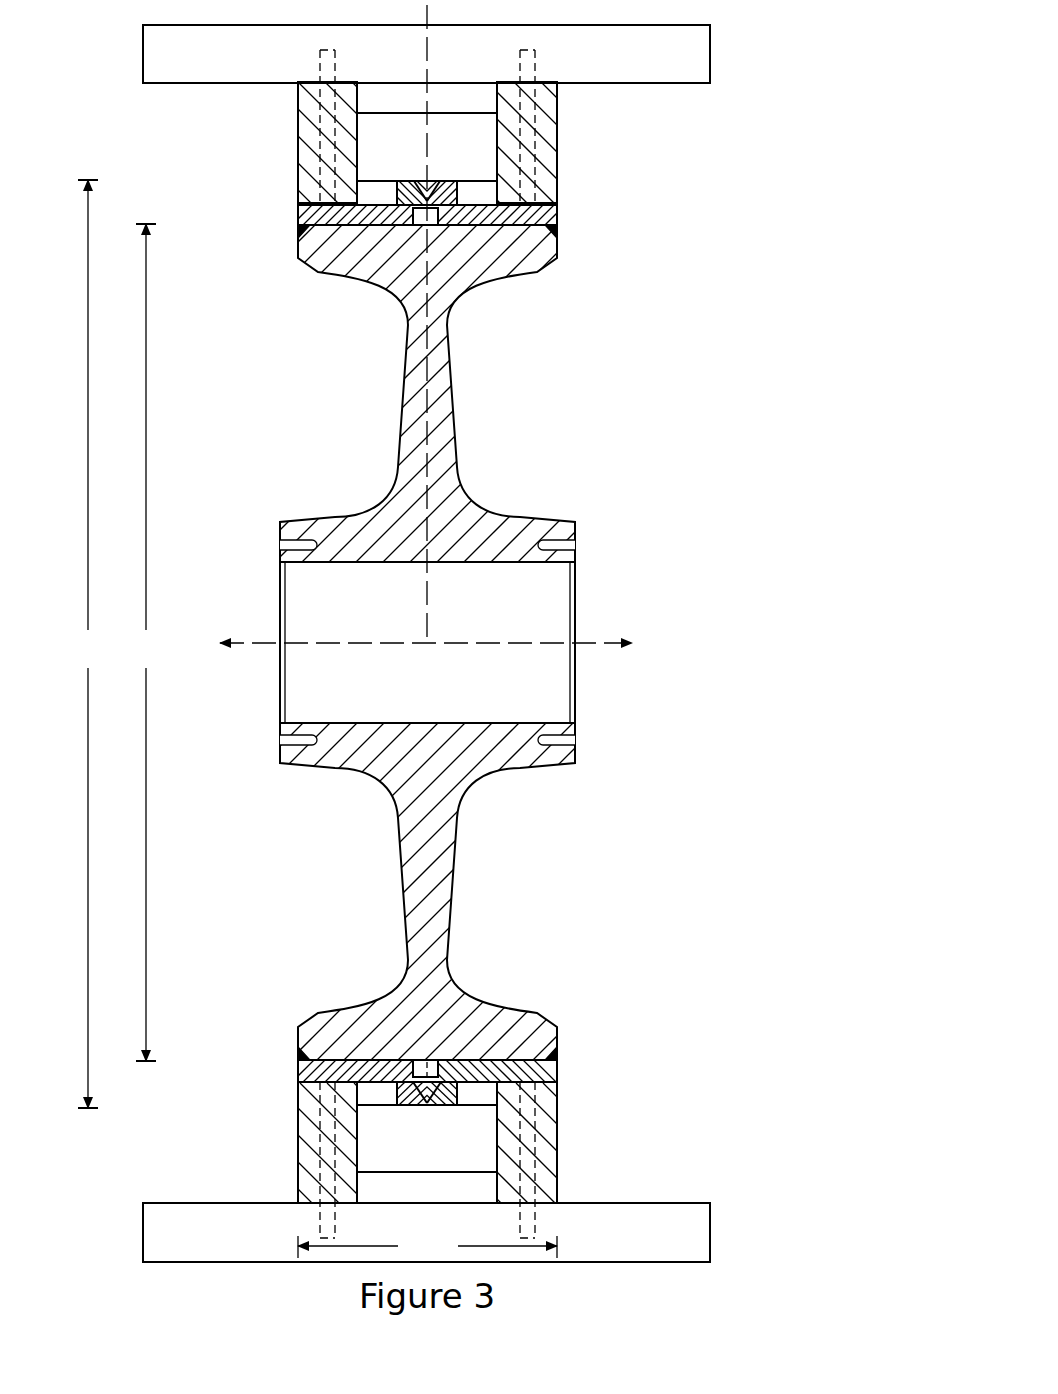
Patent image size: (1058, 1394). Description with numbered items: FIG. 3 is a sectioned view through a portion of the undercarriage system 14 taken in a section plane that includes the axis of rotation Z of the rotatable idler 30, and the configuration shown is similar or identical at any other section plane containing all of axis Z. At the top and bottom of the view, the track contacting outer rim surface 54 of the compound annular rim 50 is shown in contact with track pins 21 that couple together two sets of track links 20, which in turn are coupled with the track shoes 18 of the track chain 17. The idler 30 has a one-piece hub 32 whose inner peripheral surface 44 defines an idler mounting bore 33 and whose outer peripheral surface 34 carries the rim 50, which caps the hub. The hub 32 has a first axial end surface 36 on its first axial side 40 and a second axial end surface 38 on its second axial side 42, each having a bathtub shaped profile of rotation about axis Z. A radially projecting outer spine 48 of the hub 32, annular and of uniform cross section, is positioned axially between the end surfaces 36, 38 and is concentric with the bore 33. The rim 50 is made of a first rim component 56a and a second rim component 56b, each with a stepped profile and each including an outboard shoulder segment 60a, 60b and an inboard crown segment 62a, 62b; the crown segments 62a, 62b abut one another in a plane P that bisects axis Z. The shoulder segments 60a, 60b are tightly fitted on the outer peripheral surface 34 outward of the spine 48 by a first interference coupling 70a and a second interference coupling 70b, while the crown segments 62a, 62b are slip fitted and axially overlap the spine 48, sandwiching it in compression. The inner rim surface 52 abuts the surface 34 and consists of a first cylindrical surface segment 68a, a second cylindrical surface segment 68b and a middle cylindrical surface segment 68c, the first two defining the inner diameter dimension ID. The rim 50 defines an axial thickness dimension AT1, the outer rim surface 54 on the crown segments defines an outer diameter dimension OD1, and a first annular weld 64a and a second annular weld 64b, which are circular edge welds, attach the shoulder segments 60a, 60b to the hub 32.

The undercarriage system 14 is at (797, 66).
The track chain 17 is at (727, 143).
The track shoes 18 is at (695, 60).
The track links 20 is at (557, 118).
The track pins 21 is at (378, 120).
The rotatable idler 30 is at (477, 684).
The one-piece hub 32 is at (573, 766).
The idler mounting bore 33 is at (533, 660).
The outer peripheral surface 34 is at (521, 208).
The first axial end surface 36 is at (404, 388).
The second axial end surface 38 is at (449, 366).
The first axial side 40 is at (352, 463).
The second axial side 42 is at (490, 463).
The inner peripheral surface 44 is at (548, 565).
The radially projecting outer spine 48 is at (456, 191).
The compound annular rim 50 is at (419, 210).
The inner rim surface 52 is at (383, 237).
The track contacting outer rim surface 54 is at (385, 202).
The first rim component 56a is at (338, 241).
The second rim component 56b is at (517, 241).
The outboard shoulder segment 60a is at (305, 210).
The outboard shoulder segment 60b is at (548, 210).
The inboard crown segment 62a is at (418, 186).
The inboard crown segment 62b is at (437, 186).
The first annular weld 64a is at (297, 239).
The second annular weld 64b is at (558, 239).
The first cylindrical surface segment 68a is at (371, 1057).
The second cylindrical surface segment 68b is at (471, 1057).
The middle cylindrical surface segment 68c is at (428, 1072).
The first interference coupling 70a is at (324, 1057).
The second interference coupling 70b is at (524, 1057).
The plane P is at (429, 8).
The axis of rotation Z is at (437, 647).
The outer diameter dimension OD1 is at (84, 644).
The inner diameter dimension ID is at (143, 642).
The axial thickness dimension AT1 is at (427, 1248).